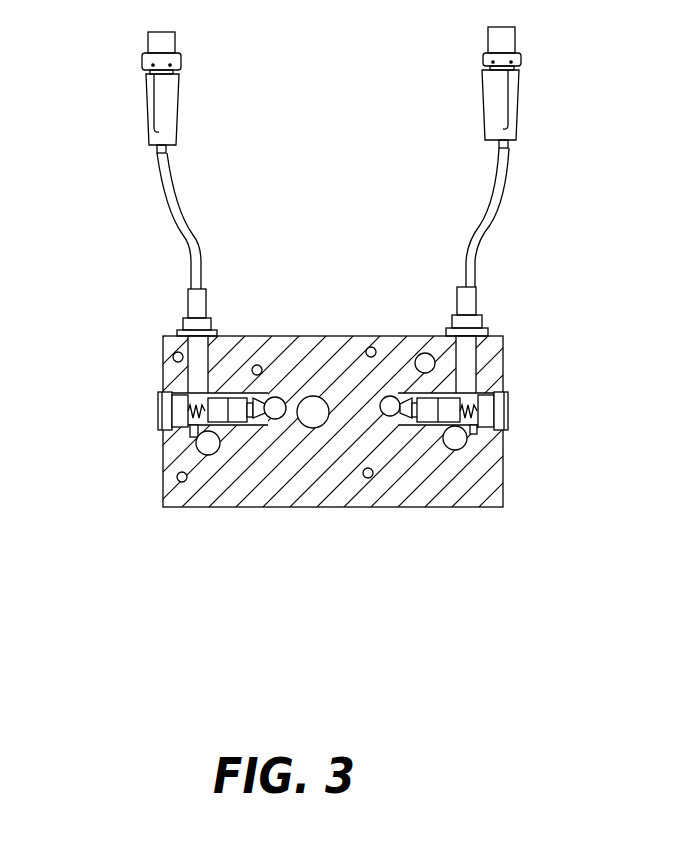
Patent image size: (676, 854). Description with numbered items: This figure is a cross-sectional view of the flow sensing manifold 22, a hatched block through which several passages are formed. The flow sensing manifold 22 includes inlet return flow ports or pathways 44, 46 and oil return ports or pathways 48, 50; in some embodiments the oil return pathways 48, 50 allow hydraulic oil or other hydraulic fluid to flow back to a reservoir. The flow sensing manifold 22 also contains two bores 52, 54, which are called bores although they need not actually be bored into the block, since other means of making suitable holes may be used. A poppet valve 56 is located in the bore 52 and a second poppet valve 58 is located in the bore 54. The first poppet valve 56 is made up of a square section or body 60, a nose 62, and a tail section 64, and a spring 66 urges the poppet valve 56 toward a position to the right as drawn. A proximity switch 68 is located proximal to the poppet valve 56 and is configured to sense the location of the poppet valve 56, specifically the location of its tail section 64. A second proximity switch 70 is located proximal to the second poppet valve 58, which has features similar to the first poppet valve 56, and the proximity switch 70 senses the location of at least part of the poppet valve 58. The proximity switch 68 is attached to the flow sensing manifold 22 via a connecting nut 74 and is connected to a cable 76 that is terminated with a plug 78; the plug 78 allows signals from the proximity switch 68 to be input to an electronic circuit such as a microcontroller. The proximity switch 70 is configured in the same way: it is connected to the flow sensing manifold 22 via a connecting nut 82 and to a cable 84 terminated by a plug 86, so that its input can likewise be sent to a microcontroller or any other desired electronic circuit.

The flow sensing manifold 22 is at (317, 336).
The inlet return flow port 44 is at (280, 424).
The inlet return flow port 46 is at (382, 428).
The oil return port 48 is at (470, 452).
The oil return port 50 is at (197, 463).
The bore 52 is at (269, 396).
The bore 54 is at (402, 378).
The poppet valve 56 is at (228, 382).
The second poppet valve 58 is at (432, 434).
The square section 60 is at (240, 418).
The nose 62 is at (248, 420).
The tail section 64 is at (213, 416).
The spring 66 is at (187, 398).
The proximity switch 68 is at (196, 363).
The second proximity switch 70 is at (468, 353).
The connecting nut 74 is at (180, 327).
The cable 76 is at (174, 223).
The plug 78 is at (151, 113).
The connecting nut 82 is at (473, 323).
The cable 84 is at (502, 189).
The plug 86 is at (499, 98).